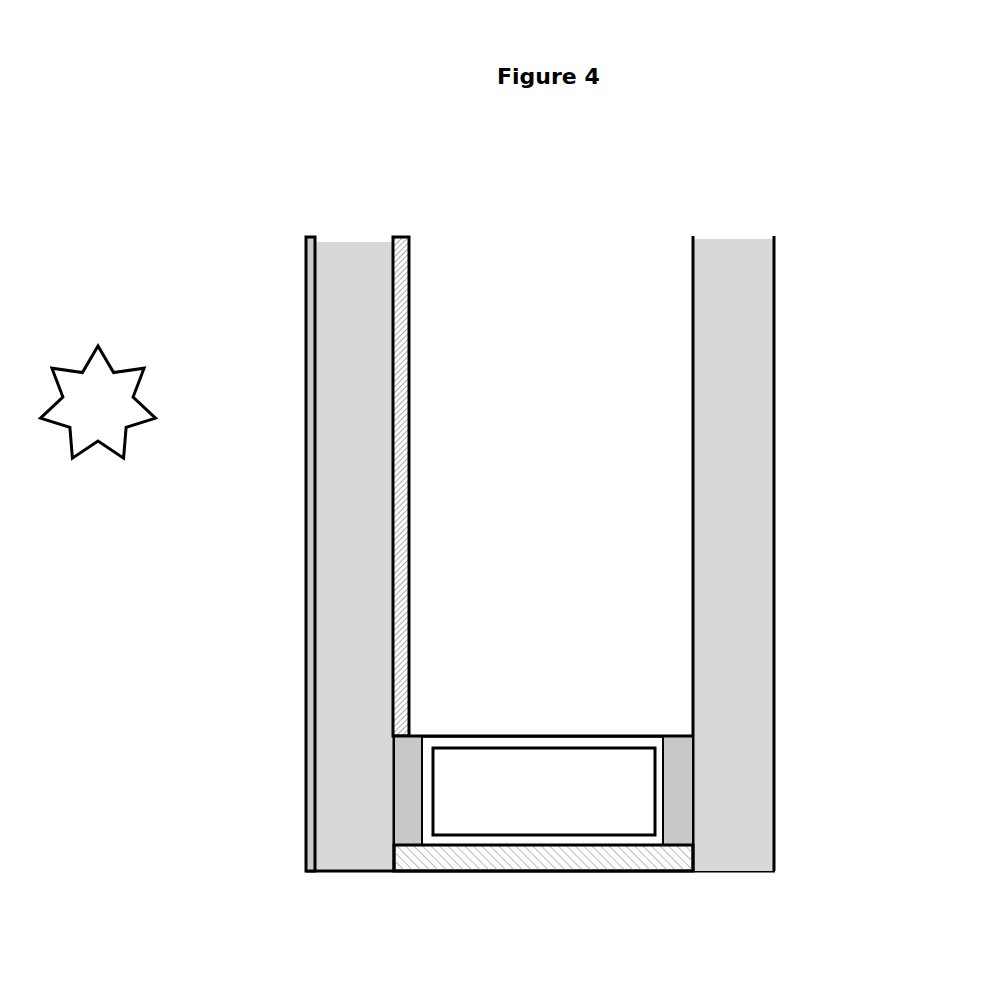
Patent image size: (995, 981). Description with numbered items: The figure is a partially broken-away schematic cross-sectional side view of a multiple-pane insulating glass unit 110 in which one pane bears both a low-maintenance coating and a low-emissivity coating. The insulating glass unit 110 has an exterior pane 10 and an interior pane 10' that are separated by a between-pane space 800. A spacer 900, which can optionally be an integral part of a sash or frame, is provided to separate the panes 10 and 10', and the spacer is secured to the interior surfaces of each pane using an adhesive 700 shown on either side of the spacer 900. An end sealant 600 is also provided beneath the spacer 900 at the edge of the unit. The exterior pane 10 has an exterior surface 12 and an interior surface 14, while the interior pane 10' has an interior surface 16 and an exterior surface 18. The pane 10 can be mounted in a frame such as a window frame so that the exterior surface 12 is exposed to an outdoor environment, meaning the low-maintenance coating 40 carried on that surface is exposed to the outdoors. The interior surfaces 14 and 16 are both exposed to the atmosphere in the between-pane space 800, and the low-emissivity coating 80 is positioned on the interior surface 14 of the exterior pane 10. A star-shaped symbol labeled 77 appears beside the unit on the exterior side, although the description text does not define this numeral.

The insulating glass unit 110 is at (207, 101).
The exterior pane 10 is at (539, 599).
The interior pane 10' is at (747, 585).
The exterior surface 12 is at (314, 238).
The interior surface 14 is at (395, 237).
The interior surface 16 is at (692, 290).
The exterior surface 18 is at (775, 285).
The low-maintenance coating 40 is at (306, 278).
The low-emissivity coating 80 is at (409, 278).
The between-pane space 800 is at (584, 318).
The adhesive 700 is at (680, 752).
The spacer 900 is at (530, 812).
The end sealant 600 is at (597, 858).
The solar radiation 77 is at (98, 402).